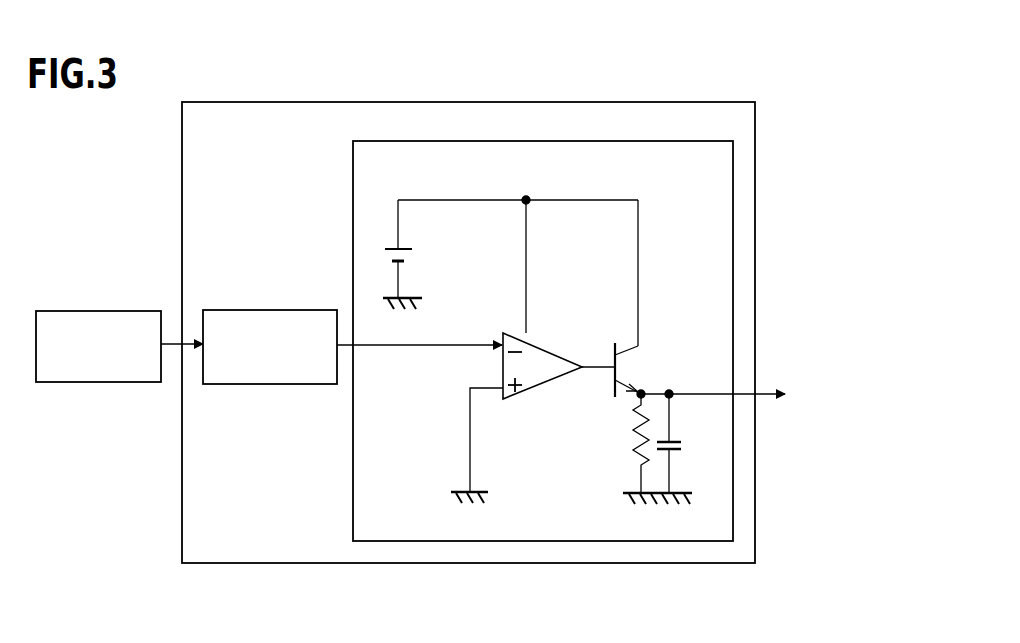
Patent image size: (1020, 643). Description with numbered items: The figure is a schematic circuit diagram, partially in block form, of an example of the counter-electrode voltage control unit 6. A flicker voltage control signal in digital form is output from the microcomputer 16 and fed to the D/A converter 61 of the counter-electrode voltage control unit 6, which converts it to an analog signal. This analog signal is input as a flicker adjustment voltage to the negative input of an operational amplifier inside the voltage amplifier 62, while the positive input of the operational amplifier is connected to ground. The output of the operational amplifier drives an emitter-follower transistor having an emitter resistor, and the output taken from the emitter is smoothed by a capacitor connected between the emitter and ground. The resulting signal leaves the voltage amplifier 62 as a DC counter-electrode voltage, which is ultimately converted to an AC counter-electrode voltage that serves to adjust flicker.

The counter-electrode voltage control unit 6 is at (182, 234).
The microcomputer 16 is at (98, 311).
The D/A converter 61 is at (290, 310).
The voltage amplifier 62 is at (353, 195).